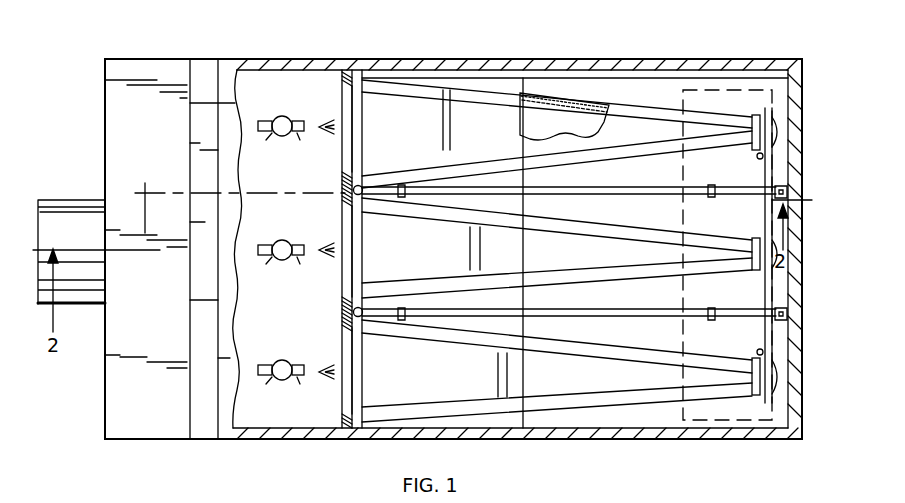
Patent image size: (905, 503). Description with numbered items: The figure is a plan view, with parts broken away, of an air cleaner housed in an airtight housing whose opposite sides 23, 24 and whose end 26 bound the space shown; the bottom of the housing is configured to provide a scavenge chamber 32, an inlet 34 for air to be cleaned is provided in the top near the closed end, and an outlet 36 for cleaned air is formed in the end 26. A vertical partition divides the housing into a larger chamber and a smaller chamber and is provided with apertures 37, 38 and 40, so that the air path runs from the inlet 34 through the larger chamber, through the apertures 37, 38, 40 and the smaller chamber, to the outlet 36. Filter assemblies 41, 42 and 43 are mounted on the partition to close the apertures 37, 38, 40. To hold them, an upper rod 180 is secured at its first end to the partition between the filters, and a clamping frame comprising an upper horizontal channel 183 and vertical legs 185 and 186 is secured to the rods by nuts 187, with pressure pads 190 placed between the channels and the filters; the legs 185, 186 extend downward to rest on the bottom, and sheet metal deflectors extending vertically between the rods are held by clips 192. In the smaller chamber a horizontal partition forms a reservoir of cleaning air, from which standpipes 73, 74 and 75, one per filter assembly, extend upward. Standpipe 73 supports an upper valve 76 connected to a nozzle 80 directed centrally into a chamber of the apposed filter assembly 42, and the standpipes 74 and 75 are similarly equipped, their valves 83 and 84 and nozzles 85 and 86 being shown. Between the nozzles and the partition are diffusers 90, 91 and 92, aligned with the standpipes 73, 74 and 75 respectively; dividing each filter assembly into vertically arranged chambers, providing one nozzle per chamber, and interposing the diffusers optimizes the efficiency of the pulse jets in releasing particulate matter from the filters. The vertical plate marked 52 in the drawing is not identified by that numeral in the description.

The side 23 is at (547, 67).
The side 24 is at (556, 441).
The end 26 is at (221, 76).
The scavenge chamber 32 is at (474, 77).
The inlet 34 is at (708, 89).
The outlet 36 is at (68, 199).
The aperture 37 is at (350, 131).
The aperture 38 is at (354, 254).
The aperture 40 is at (346, 398).
The filter assembly 41 is at (467, 139).
The filter assembly 42 is at (499, 261).
The filter assembly 43 is at (525, 385).
The partition plate 52 is at (356, 144).
The standpipe 73 is at (262, 147).
The standpipe 74 is at (256, 270).
The standpipe 75 is at (256, 390).
The upper valve 76 is at (283, 118).
The nozzle 80 is at (305, 147).
The valve 83 is at (282, 241).
The valve 84 is at (282, 359).
The nozzle 85 is at (295, 274).
The nozzle 86 is at (295, 394).
The diffuser 90 is at (325, 119).
The diffuser 91 is at (325, 242).
The diffuser 92 is at (325, 363).
The upper rod 180 is at (587, 190).
The upper horizontal channel 183 is at (756, 228).
The vertical leg 185 is at (768, 112).
The vertical leg 186 is at (748, 390).
The nut 187 is at (776, 199).
The pressure pad 190 is at (760, 158).
The clip 192 is at (404, 183).